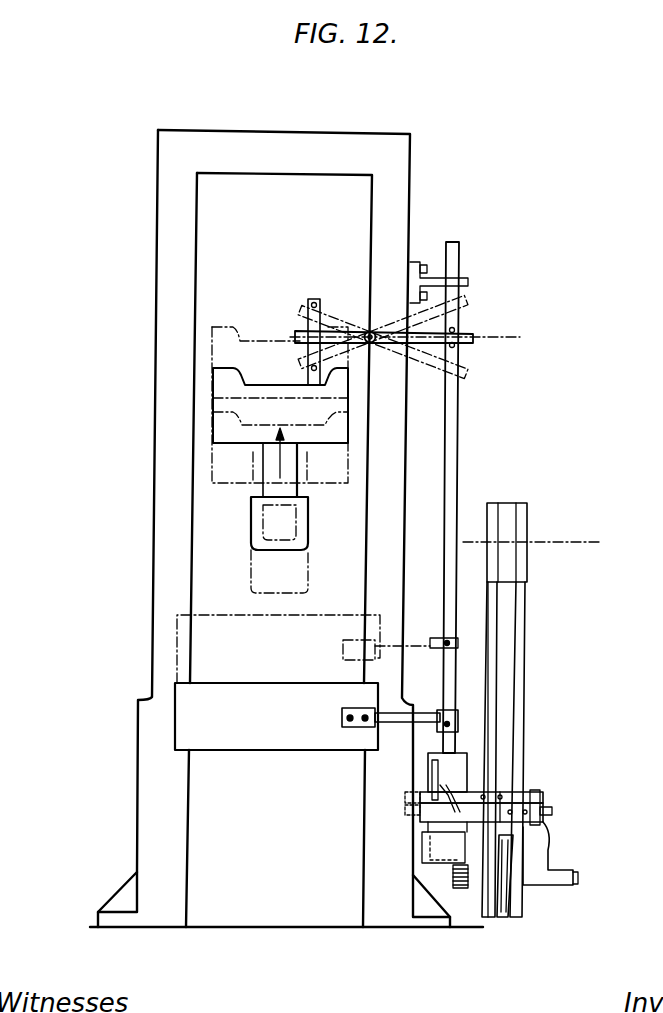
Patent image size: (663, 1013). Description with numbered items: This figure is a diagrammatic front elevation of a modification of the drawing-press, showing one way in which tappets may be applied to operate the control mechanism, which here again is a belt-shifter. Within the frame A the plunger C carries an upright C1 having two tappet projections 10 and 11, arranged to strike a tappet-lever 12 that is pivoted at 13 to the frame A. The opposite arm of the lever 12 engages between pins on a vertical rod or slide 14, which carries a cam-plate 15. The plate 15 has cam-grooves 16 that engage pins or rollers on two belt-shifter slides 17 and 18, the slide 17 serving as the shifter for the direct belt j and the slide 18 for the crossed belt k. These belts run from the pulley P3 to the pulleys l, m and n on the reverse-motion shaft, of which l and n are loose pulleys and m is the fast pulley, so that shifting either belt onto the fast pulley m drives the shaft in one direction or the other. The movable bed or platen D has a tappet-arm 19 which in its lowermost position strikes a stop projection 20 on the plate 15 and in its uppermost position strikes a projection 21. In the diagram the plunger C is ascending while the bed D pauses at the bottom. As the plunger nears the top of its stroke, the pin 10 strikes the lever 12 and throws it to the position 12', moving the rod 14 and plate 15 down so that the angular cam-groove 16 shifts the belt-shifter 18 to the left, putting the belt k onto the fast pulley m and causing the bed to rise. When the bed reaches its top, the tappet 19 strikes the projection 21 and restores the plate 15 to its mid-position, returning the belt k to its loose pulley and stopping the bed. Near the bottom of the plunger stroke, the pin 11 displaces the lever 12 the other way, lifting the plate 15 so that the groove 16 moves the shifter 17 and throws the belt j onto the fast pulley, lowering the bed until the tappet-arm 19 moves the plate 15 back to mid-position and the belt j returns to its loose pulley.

The frame A is at (286, 528).
The plunger C is at (279, 500).
The upright C1 is at (300, 348).
The movable bed or platen D is at (302, 682).
The pulley P3 is at (507, 505).
The tappet projection 10 is at (311, 370).
The tappet projection 11 is at (316, 302).
The tappet-lever 12 is at (405, 361).
The tappet-lever displaced position 12' is at (383, 331).
The pivot 13 is at (372, 332).
The vertical rod or slide 14 is at (463, 497).
The cam-plate 15 is at (466, 750).
The cam-grooves 16 is at (432, 774).
The belt-shifter slide 17 is at (503, 794).
The belt-shifter slide 18 is at (540, 832).
The tappet-arm 19 is at (398, 724).
The stop projection 20 is at (437, 727).
The projection 21 is at (436, 638).
The direct belt j is at (489, 688).
The crossed belt k is at (502, 792).
The loose pulley l is at (484, 917).
The fast pulley m is at (500, 917).
The loose pulley n is at (518, 917).